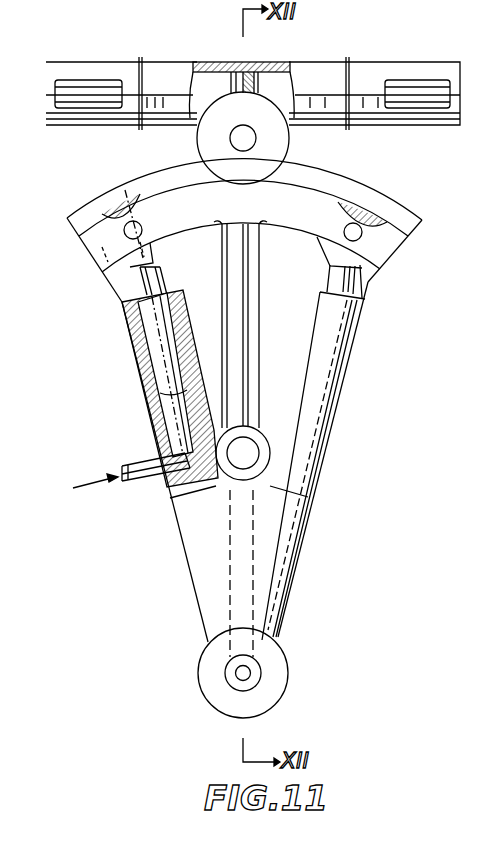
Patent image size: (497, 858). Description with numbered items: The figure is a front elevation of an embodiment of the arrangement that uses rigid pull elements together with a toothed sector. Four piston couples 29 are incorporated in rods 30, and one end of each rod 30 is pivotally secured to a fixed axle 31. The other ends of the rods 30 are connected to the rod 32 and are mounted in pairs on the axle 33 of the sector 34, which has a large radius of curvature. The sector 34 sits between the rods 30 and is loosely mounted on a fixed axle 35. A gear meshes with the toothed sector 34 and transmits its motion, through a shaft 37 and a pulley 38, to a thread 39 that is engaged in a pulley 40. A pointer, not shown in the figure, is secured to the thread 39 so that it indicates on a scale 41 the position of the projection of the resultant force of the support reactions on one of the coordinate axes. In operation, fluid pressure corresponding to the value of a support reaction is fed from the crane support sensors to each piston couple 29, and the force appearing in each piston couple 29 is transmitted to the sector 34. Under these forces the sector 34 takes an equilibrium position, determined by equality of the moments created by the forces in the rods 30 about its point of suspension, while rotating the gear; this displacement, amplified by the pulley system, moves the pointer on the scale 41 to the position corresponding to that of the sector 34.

The piston couple 29 is at (175, 422).
The rod 30 is at (195, 550).
The fixed axle 31 is at (247, 672).
The rod 32 is at (153, 340).
The axle 33 is at (147, 240).
The sector 34 is at (82, 213).
The fixed axle 35 is at (276, 420).
The shaft 37 is at (230, 137).
The pulley 38 is at (276, 130).
The thread 39 is at (190, 92).
The pulley 40 is at (80, 88).
The scale 41 is at (70, 115).